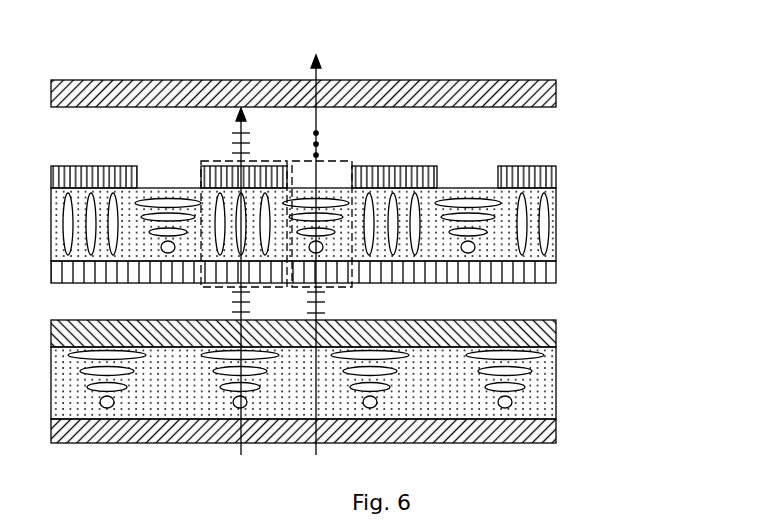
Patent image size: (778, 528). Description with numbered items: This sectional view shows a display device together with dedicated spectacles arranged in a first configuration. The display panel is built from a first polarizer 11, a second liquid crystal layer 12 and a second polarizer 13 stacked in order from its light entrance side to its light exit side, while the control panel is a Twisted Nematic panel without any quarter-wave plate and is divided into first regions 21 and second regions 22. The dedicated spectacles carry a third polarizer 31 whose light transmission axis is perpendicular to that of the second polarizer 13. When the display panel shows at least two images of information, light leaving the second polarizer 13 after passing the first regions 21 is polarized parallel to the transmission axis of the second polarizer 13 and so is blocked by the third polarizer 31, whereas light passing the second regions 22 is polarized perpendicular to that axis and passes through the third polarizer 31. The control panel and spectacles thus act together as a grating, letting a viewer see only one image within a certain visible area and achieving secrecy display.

The third polarizer 31 is at (555, 87).
The first regions 21 is at (253, 159).
The second regions 22 is at (333, 159).
The second polarizer 13 is at (555, 333).
The second liquid crystal layer 12 is at (547, 382).
The first polarizer 11 is at (555, 425).